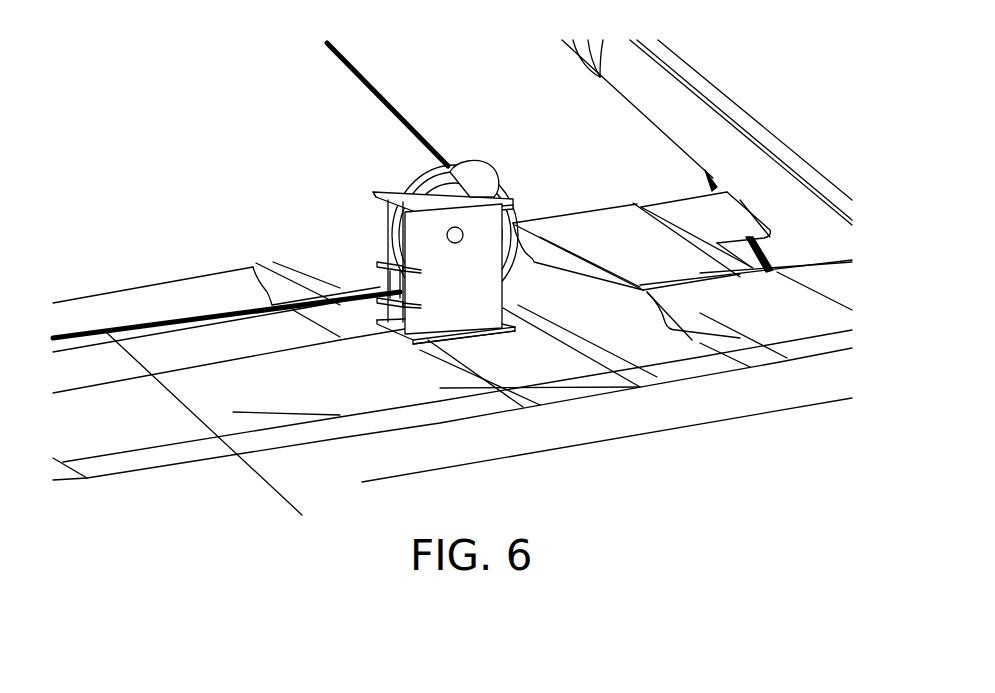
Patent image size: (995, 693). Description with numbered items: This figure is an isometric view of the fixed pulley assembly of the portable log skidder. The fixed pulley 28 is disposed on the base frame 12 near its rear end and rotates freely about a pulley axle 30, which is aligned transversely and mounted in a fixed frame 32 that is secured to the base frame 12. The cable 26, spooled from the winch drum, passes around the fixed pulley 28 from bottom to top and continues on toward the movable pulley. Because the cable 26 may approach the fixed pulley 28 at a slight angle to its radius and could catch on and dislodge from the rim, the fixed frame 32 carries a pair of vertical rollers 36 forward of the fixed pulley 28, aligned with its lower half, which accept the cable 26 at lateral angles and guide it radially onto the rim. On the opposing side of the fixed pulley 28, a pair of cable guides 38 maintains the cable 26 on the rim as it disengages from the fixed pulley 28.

The base frame 12 is at (728, 435).
The cable 26 is at (217, 507).
The fixed pulley 28 is at (440, 183).
The pulley axle 30 is at (447, 235).
The fixed frame 32 is at (465, 293).
The vertical rollers 36 is at (378, 268).
The cable guides 38 is at (475, 182).